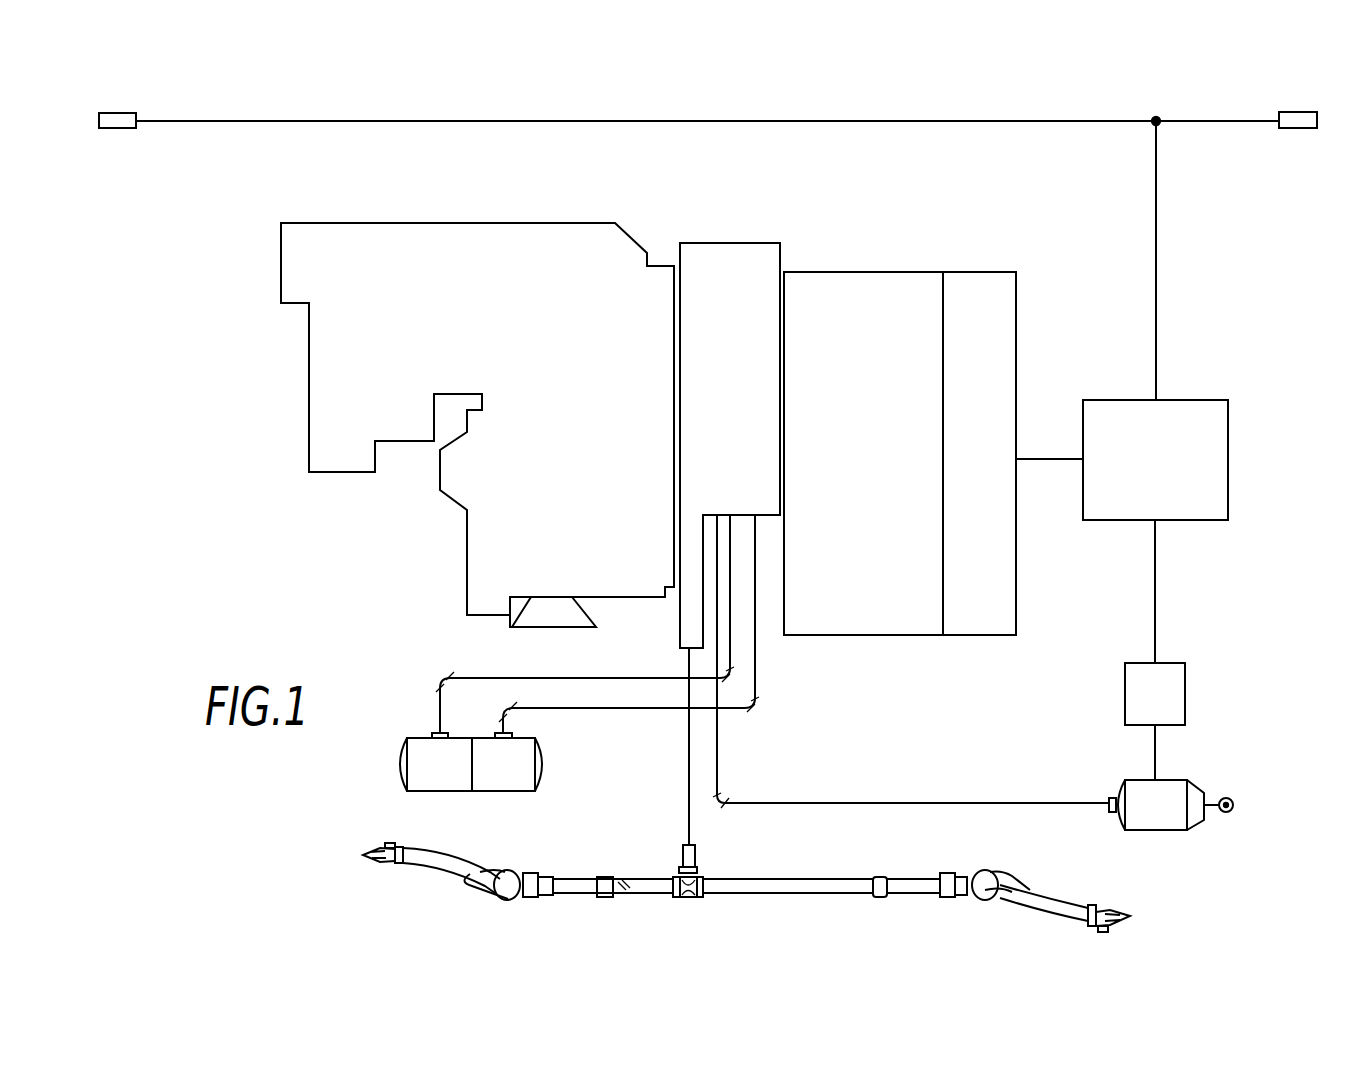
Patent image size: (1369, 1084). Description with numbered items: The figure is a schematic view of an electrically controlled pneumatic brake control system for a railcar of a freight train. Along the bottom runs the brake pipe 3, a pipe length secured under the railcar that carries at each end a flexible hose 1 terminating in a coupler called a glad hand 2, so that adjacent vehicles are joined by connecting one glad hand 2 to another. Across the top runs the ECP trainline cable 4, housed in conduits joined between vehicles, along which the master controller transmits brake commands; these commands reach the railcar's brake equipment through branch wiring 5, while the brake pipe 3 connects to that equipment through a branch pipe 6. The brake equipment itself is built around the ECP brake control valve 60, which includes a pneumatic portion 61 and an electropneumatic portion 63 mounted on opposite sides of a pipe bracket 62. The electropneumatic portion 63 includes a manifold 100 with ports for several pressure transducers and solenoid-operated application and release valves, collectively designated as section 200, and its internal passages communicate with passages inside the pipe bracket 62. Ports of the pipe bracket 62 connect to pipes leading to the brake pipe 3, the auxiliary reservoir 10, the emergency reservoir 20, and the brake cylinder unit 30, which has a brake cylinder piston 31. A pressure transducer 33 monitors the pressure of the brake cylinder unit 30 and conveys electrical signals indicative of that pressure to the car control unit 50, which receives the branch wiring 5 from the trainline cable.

The flexible hose 1 is at (450, 862).
The glad hand 2 is at (383, 863).
The brake pipe 3 is at (757, 879).
The ECP trainline cable 4 is at (204, 122).
The branch wiring 5 is at (1157, 194).
The branch pipe 6 is at (689, 777).
The auxiliary reservoir 10 is at (517, 775).
The emergency reservoir 20 is at (452, 775).
The brake cylinder unit 30 is at (1197, 675).
The brake cylinder piston 31 is at (1233, 795).
The pressure transducer 33 is at (1185, 672).
The car control unit 50 is at (1190, 400).
The ECP brake control valve 60 is at (285, 400).
The pneumatic portion 61 is at (460, 223).
The pipe bracket 62 is at (703, 243).
The electropneumatic portion 63 is at (925, 394).
The manifold 100 is at (837, 272).
The section of transducers and solenoid valves 200 is at (1016, 323).